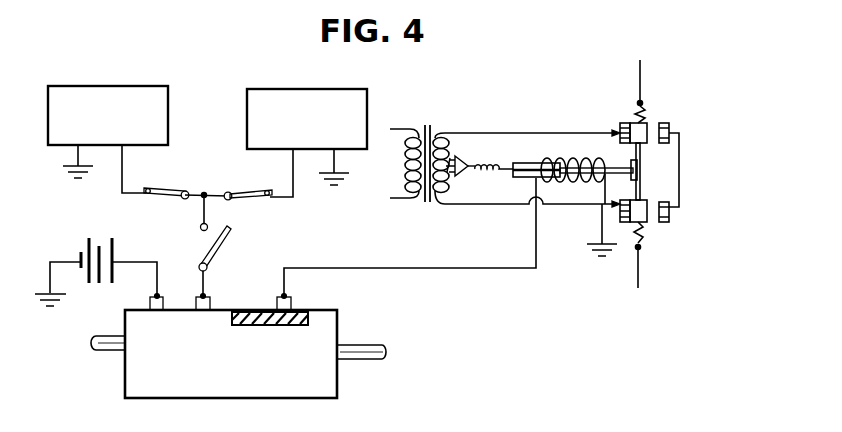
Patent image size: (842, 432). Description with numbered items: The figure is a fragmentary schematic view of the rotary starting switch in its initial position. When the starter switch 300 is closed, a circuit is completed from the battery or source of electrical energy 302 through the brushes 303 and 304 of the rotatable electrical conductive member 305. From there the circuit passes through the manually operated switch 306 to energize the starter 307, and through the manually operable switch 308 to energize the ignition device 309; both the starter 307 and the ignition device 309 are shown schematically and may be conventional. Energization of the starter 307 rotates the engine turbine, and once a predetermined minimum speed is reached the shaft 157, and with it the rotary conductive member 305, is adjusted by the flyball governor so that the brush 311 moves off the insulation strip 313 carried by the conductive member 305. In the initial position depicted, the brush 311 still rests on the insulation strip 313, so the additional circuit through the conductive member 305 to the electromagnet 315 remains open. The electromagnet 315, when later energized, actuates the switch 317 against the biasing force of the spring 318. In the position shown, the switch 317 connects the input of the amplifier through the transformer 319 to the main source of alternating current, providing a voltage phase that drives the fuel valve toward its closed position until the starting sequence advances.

The starter switch 300 is at (222, 222).
The battery 302 is at (95, 244).
The brush 303 is at (150, 303).
The brush 304 is at (210, 305).
The rotatable electrical conductive member 305 is at (215, 391).
The manually operated switch 306 is at (176, 190).
The starter 307 is at (93, 134).
The manually operable switch 308 is at (248, 190).
The ignition device 309 is at (292, 137).
The brush 311 is at (292, 305).
The insulation strip 313 is at (267, 326).
The electromagnet 315 is at (566, 148).
The switch 317 is at (648, 162).
The spring 318 is at (497, 165).
The transformer 319 is at (439, 120).
The shaft 157 is at (108, 348).